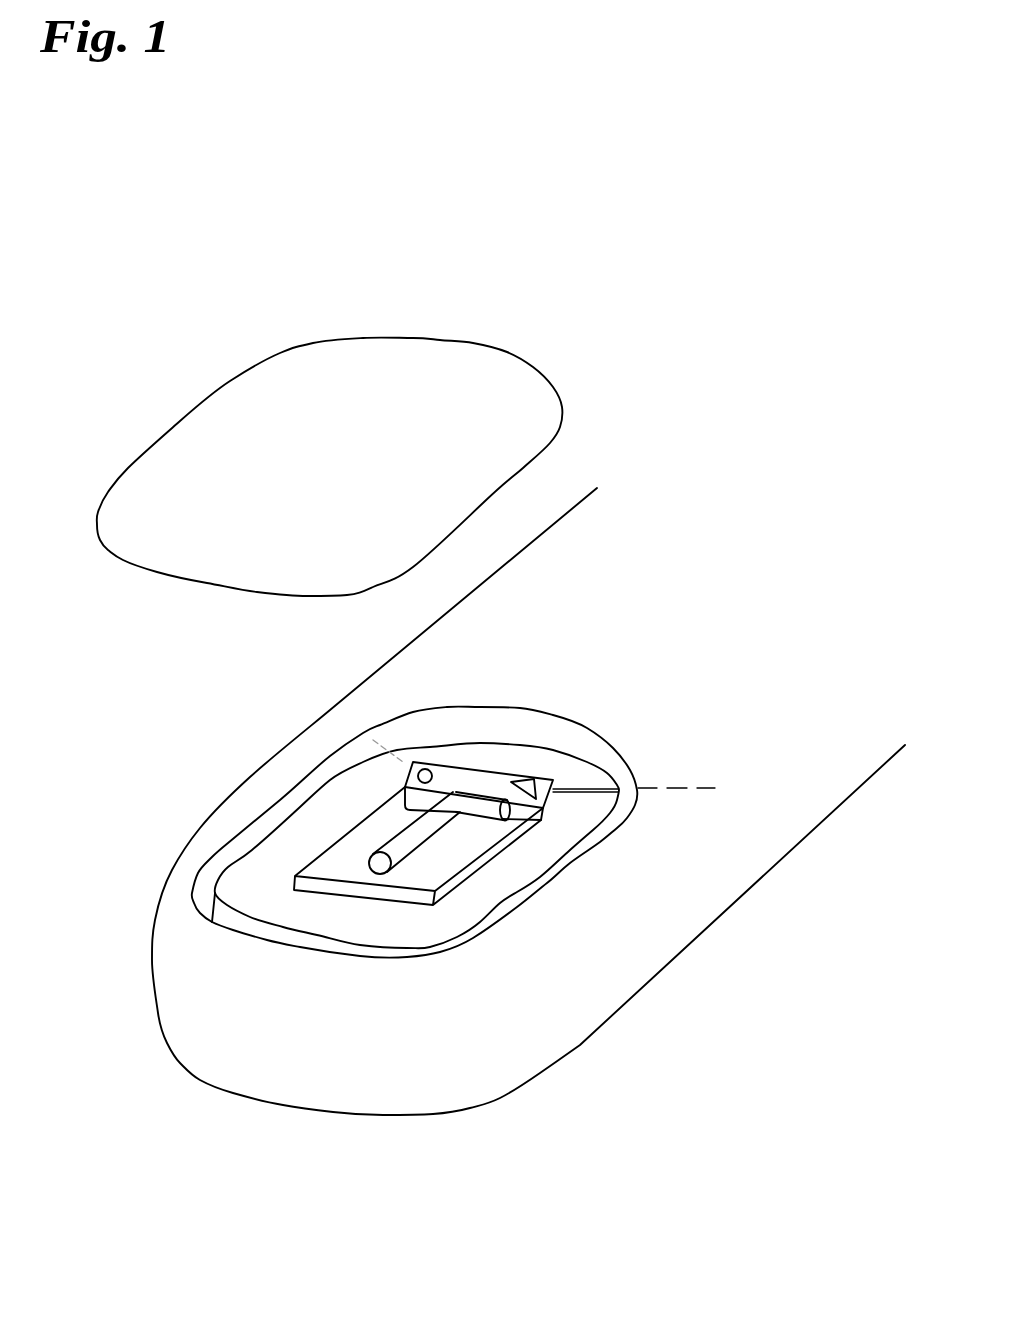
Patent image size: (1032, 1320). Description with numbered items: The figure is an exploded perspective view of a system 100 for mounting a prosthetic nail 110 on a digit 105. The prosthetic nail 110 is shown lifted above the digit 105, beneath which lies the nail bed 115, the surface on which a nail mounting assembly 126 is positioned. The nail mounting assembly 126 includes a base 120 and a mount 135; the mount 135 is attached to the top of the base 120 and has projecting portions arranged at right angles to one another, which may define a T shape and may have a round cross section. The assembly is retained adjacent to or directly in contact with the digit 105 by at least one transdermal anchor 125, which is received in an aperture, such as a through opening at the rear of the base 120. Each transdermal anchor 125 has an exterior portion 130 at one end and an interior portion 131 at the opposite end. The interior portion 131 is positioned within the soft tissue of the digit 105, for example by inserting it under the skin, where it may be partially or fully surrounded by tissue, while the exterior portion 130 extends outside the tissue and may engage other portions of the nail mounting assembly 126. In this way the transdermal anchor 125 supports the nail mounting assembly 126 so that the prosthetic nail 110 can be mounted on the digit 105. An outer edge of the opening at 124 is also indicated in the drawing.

The system for mounting a prosthetic nail 100 is at (755, 290).
The digit 105 is at (642, 945).
The prosthetic nail 110 is at (297, 388).
The nail bed 115 is at (250, 883).
The base 120 is at (327, 870).
The outer rim edge 124 is at (377, 733).
The transdermal anchor 125 is at (622, 770).
The nail mounting assembly 126 is at (433, 722).
The exterior portion 130 is at (403, 770).
The interior portion 131 is at (393, 753).
The mount 135 is at (378, 863).